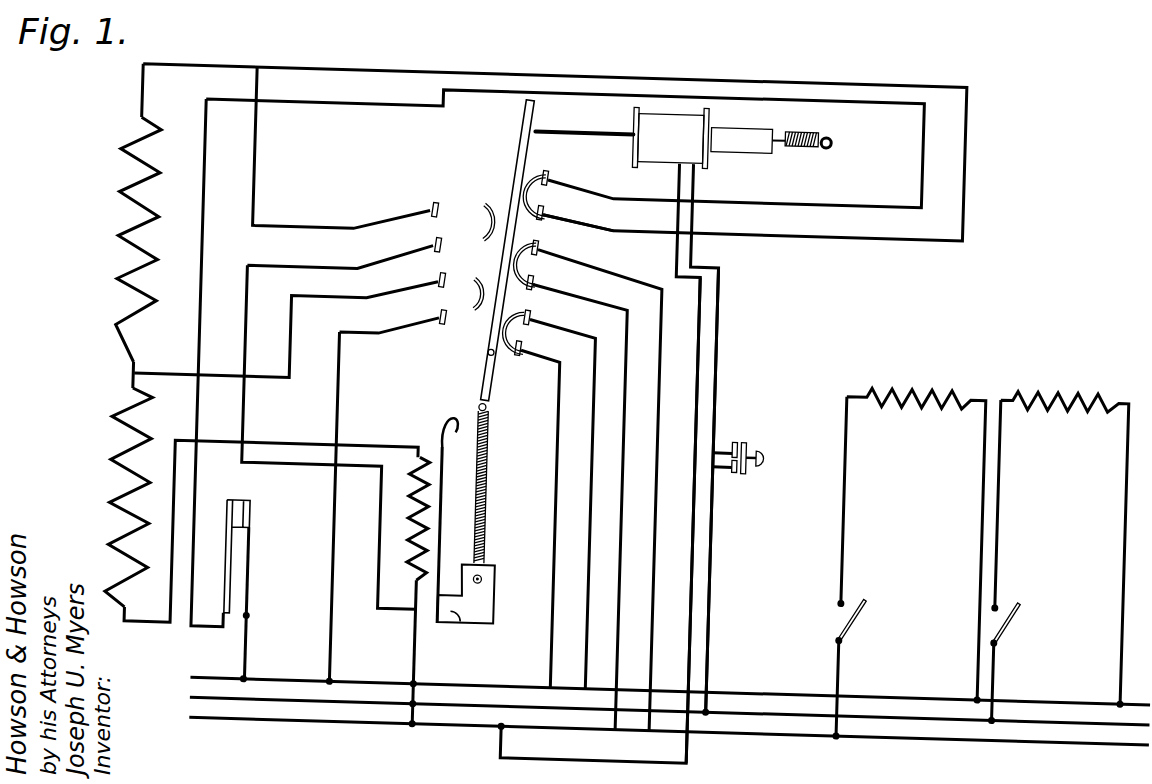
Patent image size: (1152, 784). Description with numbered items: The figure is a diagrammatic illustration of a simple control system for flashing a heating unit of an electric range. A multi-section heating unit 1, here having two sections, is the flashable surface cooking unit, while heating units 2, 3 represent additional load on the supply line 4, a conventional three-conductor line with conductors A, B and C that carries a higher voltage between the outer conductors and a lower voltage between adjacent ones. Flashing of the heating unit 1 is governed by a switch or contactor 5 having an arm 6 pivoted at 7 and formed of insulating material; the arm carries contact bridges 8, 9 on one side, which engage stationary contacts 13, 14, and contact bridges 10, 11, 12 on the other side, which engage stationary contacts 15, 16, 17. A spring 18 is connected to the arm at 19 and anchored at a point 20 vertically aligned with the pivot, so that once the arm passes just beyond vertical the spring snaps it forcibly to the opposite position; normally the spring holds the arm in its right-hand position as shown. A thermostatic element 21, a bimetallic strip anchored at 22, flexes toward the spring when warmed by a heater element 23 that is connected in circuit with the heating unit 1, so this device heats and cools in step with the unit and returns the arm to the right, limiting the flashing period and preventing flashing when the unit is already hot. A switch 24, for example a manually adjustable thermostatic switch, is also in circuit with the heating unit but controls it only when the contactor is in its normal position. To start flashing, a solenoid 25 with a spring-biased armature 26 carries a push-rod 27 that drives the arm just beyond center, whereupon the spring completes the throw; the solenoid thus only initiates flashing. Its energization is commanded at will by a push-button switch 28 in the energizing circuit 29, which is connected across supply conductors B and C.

The multi-section heating unit 1 is at (132, 326).
The heating unit 2 is at (915, 372).
The heating unit 3 is at (1065, 371).
The supply line 4 is at (305, 692).
The switch or contactor 5 is at (487, 166).
The arm 6 is at (525, 142).
The pivot 7 is at (490, 391).
The contact bridge 8 is at (455, 312).
The contact bridge 9 is at (487, 208).
The contact bridge 10 is at (534, 208).
The contact bridge 11 is at (526, 282).
The contact bridge 12 is at (516, 347).
The stationary contact 13 is at (452, 270).
The stationary contact 14 is at (444, 228).
The stationary contact 15 is at (549, 191).
The stationary contact 16 is at (541, 257).
The stationary contact 17 is at (533, 328).
The spring 18 is at (504, 461).
The connection point 19 is at (498, 338).
The anchor point 20 is at (500, 563).
The thermostatic element 21 is at (456, 524).
The anchor 22 is at (475, 612).
The heater element 23 is at (428, 498).
The switch 24 is at (258, 553).
The solenoid 25 is at (704, 105).
The spring-biased armature 26 is at (746, 126).
The push-rod 27 is at (578, 114).
The push-button switch 28 is at (740, 443).
The energizing circuit 29 is at (712, 320).